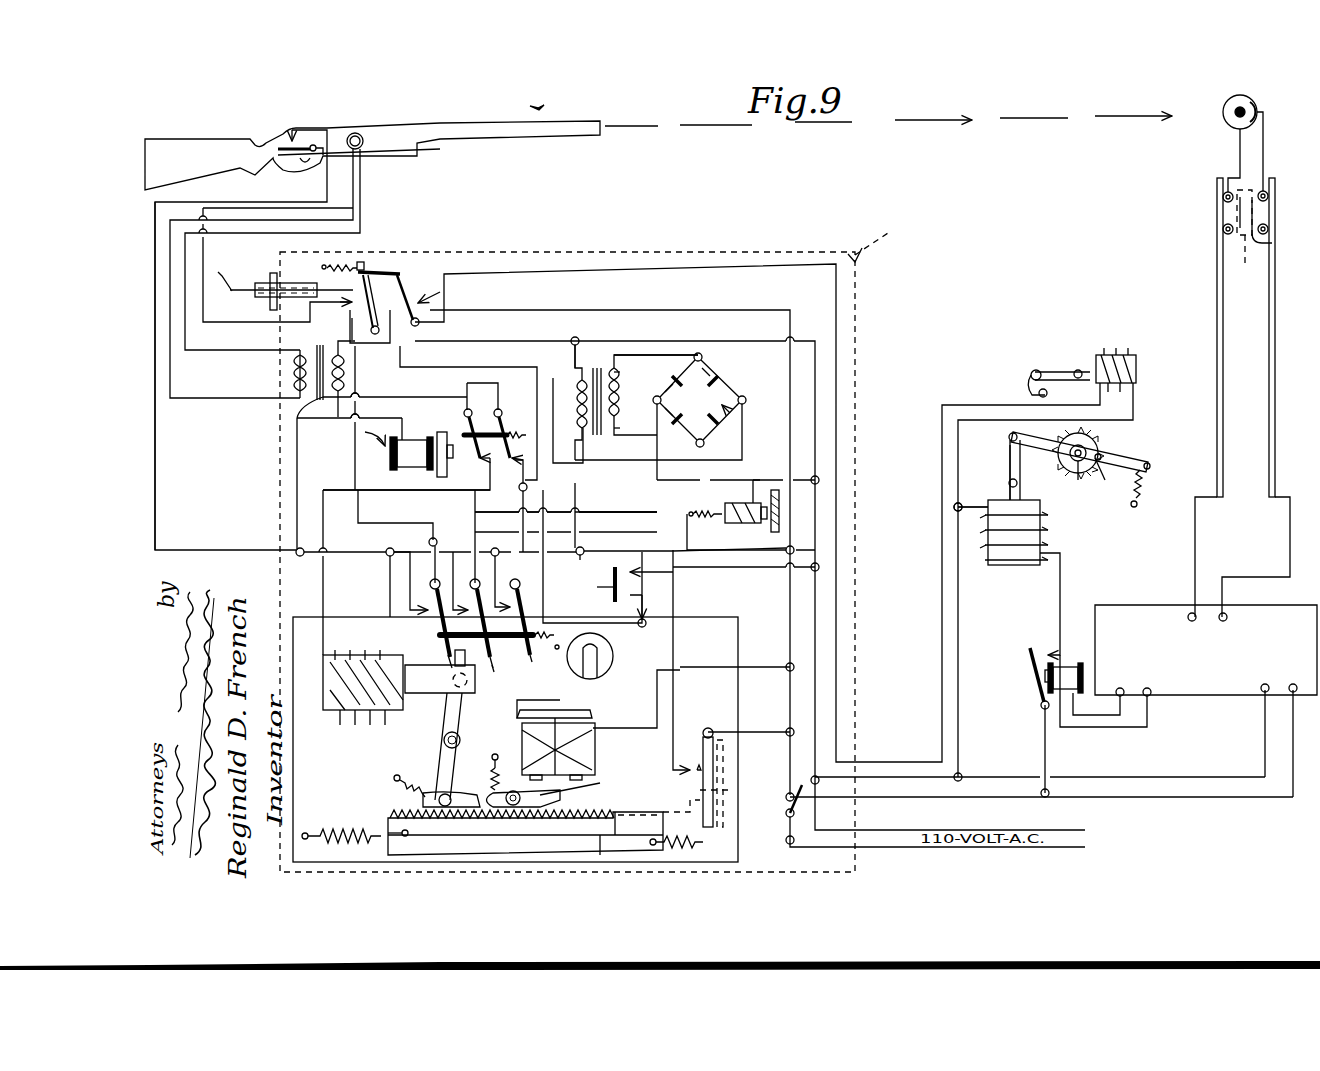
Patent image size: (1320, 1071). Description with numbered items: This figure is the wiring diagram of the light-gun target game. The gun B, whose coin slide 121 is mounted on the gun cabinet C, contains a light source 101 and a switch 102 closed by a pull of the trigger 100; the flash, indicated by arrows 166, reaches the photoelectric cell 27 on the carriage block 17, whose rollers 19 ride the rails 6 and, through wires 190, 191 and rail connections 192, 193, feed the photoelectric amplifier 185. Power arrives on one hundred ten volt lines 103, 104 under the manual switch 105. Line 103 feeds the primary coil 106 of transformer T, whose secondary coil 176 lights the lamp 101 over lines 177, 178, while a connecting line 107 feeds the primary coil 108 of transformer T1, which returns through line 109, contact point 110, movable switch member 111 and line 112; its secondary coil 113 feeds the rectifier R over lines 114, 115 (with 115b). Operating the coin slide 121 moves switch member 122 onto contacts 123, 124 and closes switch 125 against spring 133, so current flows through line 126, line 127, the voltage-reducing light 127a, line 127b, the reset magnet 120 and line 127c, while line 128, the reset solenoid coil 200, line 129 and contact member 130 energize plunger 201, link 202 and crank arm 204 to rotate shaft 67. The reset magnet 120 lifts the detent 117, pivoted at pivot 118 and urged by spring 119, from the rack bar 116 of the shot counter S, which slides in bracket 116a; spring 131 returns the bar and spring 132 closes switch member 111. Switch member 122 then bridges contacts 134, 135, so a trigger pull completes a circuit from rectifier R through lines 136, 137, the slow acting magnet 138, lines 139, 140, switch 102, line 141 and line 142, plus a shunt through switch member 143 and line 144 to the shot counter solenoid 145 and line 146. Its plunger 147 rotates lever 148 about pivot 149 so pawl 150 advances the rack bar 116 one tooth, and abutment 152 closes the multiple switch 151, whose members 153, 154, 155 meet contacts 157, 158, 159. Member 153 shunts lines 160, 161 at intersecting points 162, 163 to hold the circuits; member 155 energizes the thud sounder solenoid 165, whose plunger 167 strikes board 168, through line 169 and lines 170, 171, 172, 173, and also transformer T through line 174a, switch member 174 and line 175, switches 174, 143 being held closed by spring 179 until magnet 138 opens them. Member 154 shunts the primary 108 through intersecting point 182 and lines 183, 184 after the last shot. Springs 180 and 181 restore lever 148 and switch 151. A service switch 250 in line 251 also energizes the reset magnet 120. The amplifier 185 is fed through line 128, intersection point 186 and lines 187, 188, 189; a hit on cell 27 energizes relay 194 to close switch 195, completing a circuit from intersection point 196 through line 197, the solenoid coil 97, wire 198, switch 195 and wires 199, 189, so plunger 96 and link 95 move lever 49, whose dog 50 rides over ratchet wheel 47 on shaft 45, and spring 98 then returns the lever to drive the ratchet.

The gun B is at (510, 120).
The gun cabinet C is at (595, 541).
The shot counter S is at (720, 645).
The rectifier R is at (738, 382).
The transformer T is at (312, 350).
The transformer T' T1 is at (592, 437).
The rails 6 is at (1216, 362).
The carriage block 17 is at (1243, 234).
The rollers 19 is at (1222, 200).
The photoelectric cell 27 is at (1256, 102).
The shaft 45 is at (1074, 478).
The ratchet wheel 47 is at (1098, 445).
The lever 49 is at (1142, 455).
The dog 50 is at (1108, 473).
The shaft 67 is at (1047, 393).
The link 95 is at (1022, 472).
The solenoid plunger 96 is at (1022, 490).
The solenoid coil 97 is at (1048, 530).
The spring 98 is at (1146, 484).
The trigger 100 is at (300, 172).
The bulb 101 is at (355, 133).
The switch 102 is at (285, 143).
The power line 103 is at (520, 350).
The power line 104 is at (500, 320).
The manually controlled switch 105 is at (790, 828).
The primary coil 106 is at (290, 422).
The connecting line 107 is at (576, 353).
The primary coil 108 is at (554, 376).
The line 109 is at (590, 502).
The contact point 110 is at (706, 728).
The movable switch member 111 is at (720, 760).
The line 112 is at (750, 730).
The secondary coil 113 is at (635, 372).
The line 114 is at (639, 360).
The line 115 is at (638, 418).
The conductor 115b is at (659, 797).
The rack bar 116 is at (587, 823).
The guiding bracket 116a is at (593, 845).
The detent 117 is at (540, 803).
The pivot 118 is at (512, 790).
The spring 119 is at (494, 775).
The reset magnet 120 is at (585, 744).
The coin slide 121 is at (240, 285).
The switch member 122 is at (364, 262).
The switch contact 123 is at (378, 310).
The switch contact 124 is at (370, 332).
The switch 125 is at (397, 265).
The line 126 is at (402, 330).
The line 127 is at (401, 367).
The light 127a is at (578, 670).
The line 127b is at (510, 705).
The line 127c is at (642, 722).
The line 128 is at (960, 437).
The line 129 is at (472, 276).
The contact member 130 is at (425, 283).
The spring 131 is at (358, 808).
The spring 132 is at (688, 845).
The spring 133 is at (338, 262).
The contact member 134 is at (352, 306).
The contact member 135 is at (366, 313).
The line 136 is at (499, 383).
The line 137 is at (448, 405).
The slow acting magnet 138 is at (374, 431).
The line 139 is at (340, 425).
The line 140 is at (204, 548).
The line 141 is at (305, 130).
The line 142 is at (353, 470).
The switch member 143 is at (478, 462).
The line 144 is at (376, 488).
The solenoid 145 is at (377, 728).
The line 146 is at (356, 550).
The plunger 147 is at (430, 690).
The lever 148 is at (440, 728).
The pivot 149 is at (444, 742).
The pawl 150 is at (440, 793).
The multiple switch 151 is at (496, 658).
The abutment 152 is at (450, 662).
The movable switch member 153 is at (438, 642).
The movable switch member 154 is at (492, 668).
The movable switch member 155 is at (536, 614).
The switch contact 157 is at (426, 618).
The switch contact 158 is at (470, 618).
The switch contact 159 is at (510, 617).
The line 160 is at (414, 585).
The line 161 is at (437, 572).
The intersecting point 162 is at (403, 542).
The intersecting point 163 is at (437, 538).
The thud sounder solenoid 165 is at (720, 522).
The arrows 166 is at (940, 122).
The movable plunger 167 is at (722, 505).
The board 168 is at (772, 530).
The line 169 is at (765, 480).
The line 170 is at (704, 470).
The line 171 is at (520, 497).
The line 172 is at (496, 590).
The line 173 is at (563, 556).
The movable switch member 174 is at (503, 416).
The line 174a is at (399, 396).
The line 175 is at (526, 460).
The secondary coil 176 is at (294, 372).
The line 177 is at (364, 178).
The line 178 is at (172, 386).
The spring 179 is at (501, 424).
The spring 180 is at (395, 780).
The spring 181 is at (546, 642).
The intersecting point 182 is at (622, 572).
The line 183 is at (455, 588).
The line 184 is at (606, 516).
The photoelectric amplifier 185 is at (1158, 596).
The intersection point 186 is at (962, 775).
The line 187 is at (1158, 777).
The line 188 is at (1240, 797).
The line 189 is at (920, 800).
The wire 190 is at (1264, 148).
The wire 191 is at (1240, 152).
The electrical connection 192 is at (1278, 570).
The electrical connection 193 is at (1197, 528).
The relay 194 is at (1068, 668).
The switch 195 is at (1032, 679).
The intersection point 196 is at (962, 502).
The line 197 is at (980, 512).
The wire 198 is at (1062, 578).
The wire 199 is at (1046, 756).
The reset solenoid coil 200 is at (1125, 352).
The solenoid plunger 201 is at (1088, 368).
The link 202 is at (1056, 368).
The crank arm 204 is at (1032, 372).
The service switch 250 is at (597, 587).
The line 251 is at (740, 580).